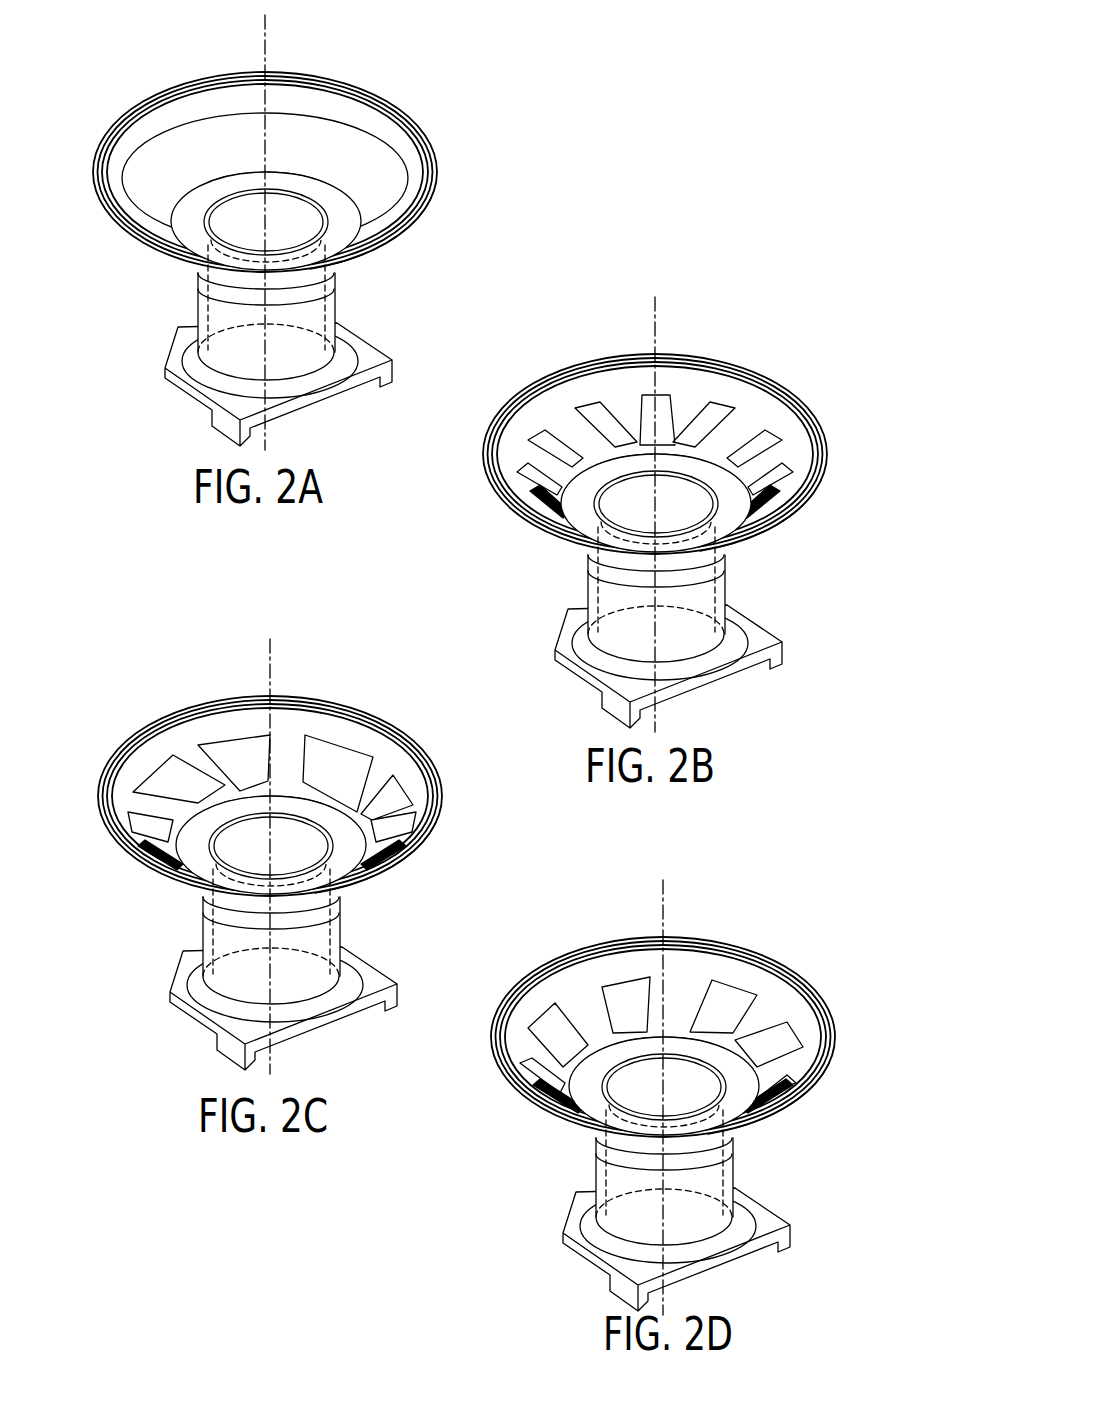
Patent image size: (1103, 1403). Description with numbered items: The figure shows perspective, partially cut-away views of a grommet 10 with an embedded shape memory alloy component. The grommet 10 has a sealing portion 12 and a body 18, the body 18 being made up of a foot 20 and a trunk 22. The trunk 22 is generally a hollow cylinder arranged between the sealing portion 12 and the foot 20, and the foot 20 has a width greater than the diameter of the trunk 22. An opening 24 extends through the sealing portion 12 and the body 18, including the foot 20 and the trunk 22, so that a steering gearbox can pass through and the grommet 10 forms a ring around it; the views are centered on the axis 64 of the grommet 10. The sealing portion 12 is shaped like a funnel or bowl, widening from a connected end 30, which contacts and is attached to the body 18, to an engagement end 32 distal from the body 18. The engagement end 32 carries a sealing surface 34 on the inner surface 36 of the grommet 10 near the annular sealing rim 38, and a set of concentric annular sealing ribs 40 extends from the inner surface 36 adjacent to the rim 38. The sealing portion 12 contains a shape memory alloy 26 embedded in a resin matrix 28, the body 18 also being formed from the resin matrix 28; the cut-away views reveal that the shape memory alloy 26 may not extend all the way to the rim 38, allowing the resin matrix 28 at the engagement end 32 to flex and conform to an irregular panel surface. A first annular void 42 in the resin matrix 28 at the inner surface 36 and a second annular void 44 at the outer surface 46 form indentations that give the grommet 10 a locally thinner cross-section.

In FIG. 2A, the grommet 10 is at (465, 88).
In FIG. 2B, the grommet 10 is at (659, 514).
In FIG. 2C, the grommet 10 is at (271, 846).
In FIG. 2D, the grommet 10 is at (669, 1090).
In FIG. 2A, the sealing portion 12 is at (188, 272).
In FIG. 2B, the sealing portion 12 is at (659, 425).
In FIG. 2C, the sealing portion 12 is at (276, 757).
In FIG. 2D, the sealing portion 12 is at (669, 1001).
In FIG. 2A, the body 18 is at (237, 447).
In FIG. 2B, the body 18 is at (656, 635).
In FIG. 2C, the body 18 is at (272, 977).
In FIG. 2D, the body 18 is at (664, 1216).
In FIG. 2A, the foot 20 is at (377, 347).
In FIG. 2B, the foot 20 is at (696, 665).
In FIG. 2C, the foot 20 is at (311, 1005).
In FIG. 2D, the foot 20 is at (704, 1248).
In FIG. 2A, the trunk 22 is at (323, 315).
In FIG. 2B, the trunk 22 is at (691, 608).
In FIG. 2C, the trunk 22 is at (309, 950).
In FIG. 2D, the trunk 22 is at (699, 1191).
In FIG. 2A, the opening 24 is at (290, 222).
In FIG. 2B, the opening 24 is at (742, 480).
In FIG. 2C, the opening 24 is at (358, 823).
In FIG. 2D, the opening 24 is at (752, 1063).
In FIG. 2A, the shape memory alloy 26 is at (393, 207).
In FIG. 2B, the shape memory alloy 26 is at (693, 456).
In FIG. 2C, the shape memory alloy 26 is at (272, 767).
In FIG. 2D, the shape memory alloy 26 is at (661, 1007).
In FIG. 2A, the resin matrix 28 is at (238, 100).
In FIG. 2B, the resin matrix 28 is at (686, 424).
In FIG. 2C, the resin matrix 28 is at (303, 756).
In FIG. 2D, the resin matrix 28 is at (696, 1000).
In FIG. 2A, the connected end 30 is at (360, 233).
In FIG. 2B, the connected end 30 is at (710, 503).
In FIG. 2C, the connected end 30 is at (324, 845).
In FIG. 2D, the connected end 30 is at (718, 1086).
In FIG. 2A, the engagement end 32 is at (358, 82).
In FIG. 2B, the engagement end 32 is at (670, 451).
In FIG. 2C, the engagement end 32 is at (274, 789).
In FIG. 2D, the engagement end 32 is at (669, 1031).
In FIG. 2A, the sealing surface 34 is at (193, 87).
In FIG. 2B, the sealing surface 34 is at (655, 422).
In FIG. 2C, the sealing surface 34 is at (270, 758).
In FIG. 2D, the sealing surface 34 is at (663, 1003).
In FIG. 2A, the inner surface 36 is at (152, 131).
In FIG. 2B, the inner surface 36 is at (655, 434).
In FIG. 2C, the inner surface 36 is at (270, 773).
In FIG. 2D, the inner surface 36 is at (663, 1016).
In FIG. 2A, the annular sealing rim 38 is at (397, 238).
In FIG. 2B, the annular sealing rim 38 is at (782, 515).
In FIG. 2C, the annular sealing rim 38 is at (397, 857).
In FIG. 2D, the annular sealing rim 38 is at (791, 1098).
In FIG. 2A, the concentric annular sealing ribs 40 is at (426, 141).
In FIG. 2B, the concentric annular sealing ribs 40 is at (691, 454).
In FIG. 2C, the concentric annular sealing ribs 40 is at (307, 796).
In FIG. 2D, the concentric annular sealing ribs 40 is at (699, 1037).
In FIG. 2A, the first annular void 42 is at (240, 180).
In FIG. 2B, the first annular void 42 is at (656, 392).
In FIG. 2C, the first annular void 42 is at (271, 732).
In FIG. 2D, the first annular void 42 is at (664, 973).
In FIG. 2A, the second annular void 44 is at (292, 293).
In FIG. 2B, the second annular void 44 is at (656, 628).
In FIG. 2C, the second annular void 44 is at (271, 970).
In FIG. 2D, the second annular void 44 is at (664, 1211).
In FIG. 2A, the outer surface 46 is at (343, 292).
In FIG. 2B, the outer surface 46 is at (705, 564).
In FIG. 2C, the outer surface 46 is at (320, 906).
In FIG. 2D, the outer surface 46 is at (713, 1145).
In FIG. 2A, the axis 64 is at (268, 43).
In FIG. 2B, the axis 64 is at (692, 514).
In FIG. 2C, the axis 64 is at (308, 856).
In FIG. 2D, the axis 64 is at (700, 1097).